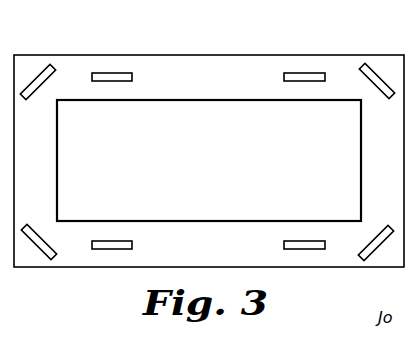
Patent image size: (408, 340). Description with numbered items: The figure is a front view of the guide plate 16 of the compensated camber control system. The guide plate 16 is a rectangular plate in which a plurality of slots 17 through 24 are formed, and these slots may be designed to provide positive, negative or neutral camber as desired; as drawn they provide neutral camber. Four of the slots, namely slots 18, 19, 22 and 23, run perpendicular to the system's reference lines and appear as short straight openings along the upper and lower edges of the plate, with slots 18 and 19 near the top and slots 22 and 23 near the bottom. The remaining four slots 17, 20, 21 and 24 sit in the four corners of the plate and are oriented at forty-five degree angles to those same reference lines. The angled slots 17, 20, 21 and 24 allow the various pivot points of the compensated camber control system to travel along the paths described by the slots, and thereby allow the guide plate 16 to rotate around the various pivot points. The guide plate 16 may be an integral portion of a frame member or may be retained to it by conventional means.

The guide plate 16 is at (197, 55).
The slot 17 is at (33, 93).
The slot 18 is at (103, 75).
The slot 19 is at (298, 75).
The slot 20 is at (372, 80).
The slot 21 is at (33, 230).
The slot 22 is at (107, 242).
The slot 23 is at (298, 242).
The slot 24 is at (382, 226).